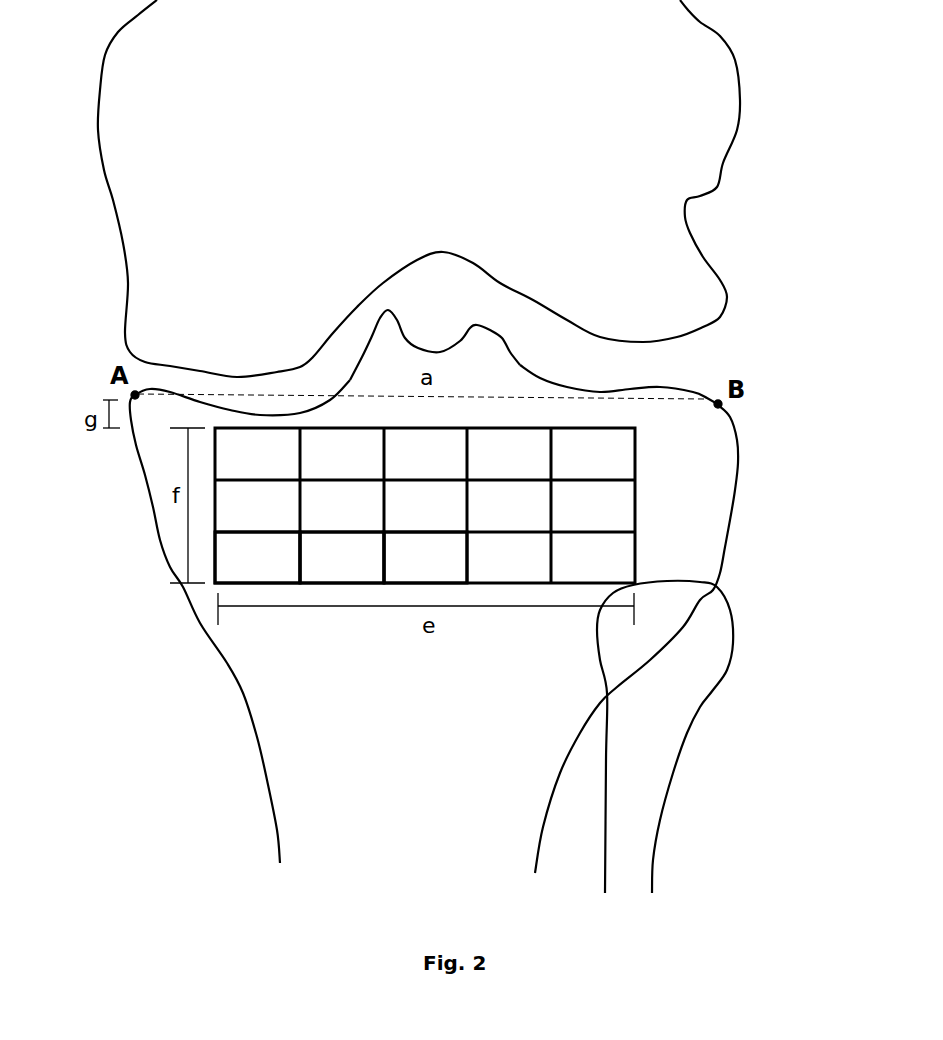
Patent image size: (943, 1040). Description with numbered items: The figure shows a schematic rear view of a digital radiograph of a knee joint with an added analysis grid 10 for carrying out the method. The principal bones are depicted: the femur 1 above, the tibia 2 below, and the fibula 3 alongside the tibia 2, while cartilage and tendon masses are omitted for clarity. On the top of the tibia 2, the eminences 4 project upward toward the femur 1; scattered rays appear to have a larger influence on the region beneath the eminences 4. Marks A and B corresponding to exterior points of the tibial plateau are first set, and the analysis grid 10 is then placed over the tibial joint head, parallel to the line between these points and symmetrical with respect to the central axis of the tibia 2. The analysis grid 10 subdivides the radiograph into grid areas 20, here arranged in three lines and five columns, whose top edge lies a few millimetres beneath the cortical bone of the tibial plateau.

The femur 1 is at (460, 48).
The tibia 2 is at (432, 698).
The fibula 3 is at (663, 670).
The eminences 4 is at (430, 331).
The analysis grid 10 is at (213, 428).
The grid areas 20 is at (413, 563).